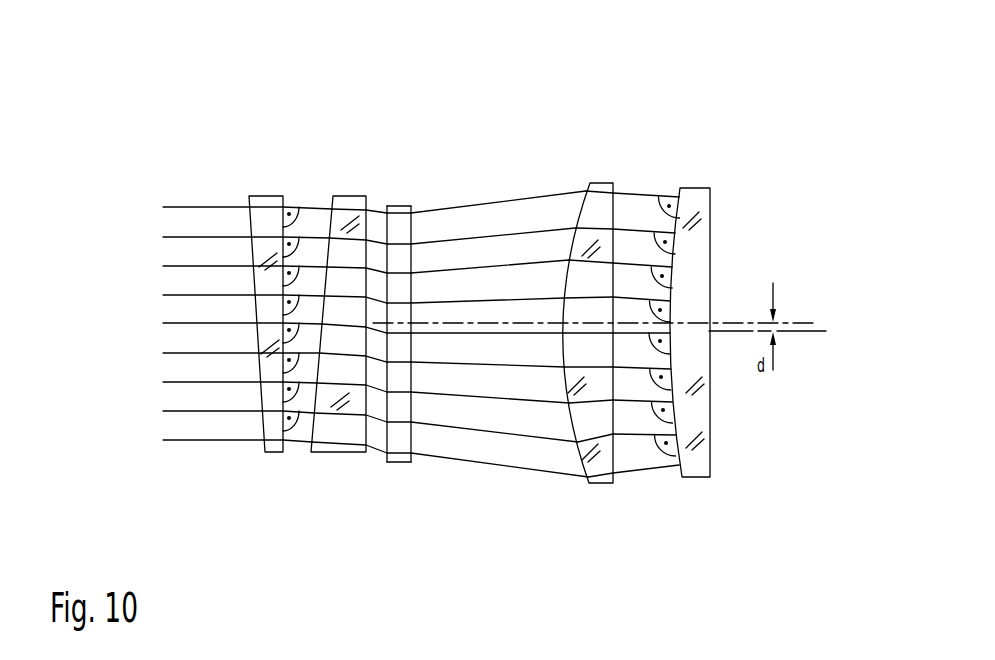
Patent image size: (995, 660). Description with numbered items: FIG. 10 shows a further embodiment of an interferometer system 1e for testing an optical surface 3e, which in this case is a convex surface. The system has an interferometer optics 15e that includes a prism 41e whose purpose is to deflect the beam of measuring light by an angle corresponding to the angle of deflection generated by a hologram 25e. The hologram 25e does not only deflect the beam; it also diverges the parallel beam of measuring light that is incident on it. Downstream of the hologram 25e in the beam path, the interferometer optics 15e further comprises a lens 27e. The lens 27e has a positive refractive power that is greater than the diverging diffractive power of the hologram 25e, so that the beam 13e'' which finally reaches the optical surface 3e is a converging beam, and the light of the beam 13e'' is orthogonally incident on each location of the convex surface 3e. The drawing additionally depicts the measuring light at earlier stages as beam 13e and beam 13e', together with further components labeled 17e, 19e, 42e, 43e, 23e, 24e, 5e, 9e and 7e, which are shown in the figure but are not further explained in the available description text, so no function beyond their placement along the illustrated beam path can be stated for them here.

The interferometer system 1e is at (276, 92).
The light beams 13e is at (247, 295).
The light beams after beam splitter 13e' is at (500, 310).
The beam 13e'' is at (646, 303).
The first optical element (wedge plate) 17e is at (265, 196).
The microlens elements 19e is at (287, 452).
The prism 41e is at (350, 196).
The wedge prism 42e is at (333, 203).
The plane parallel plate 43e is at (368, 205).
The plate body 23e is at (395, 463).
The first surface of plate 24e is at (383, 460).
The hologram 25e is at (410, 462).
The lens 27e is at (600, 483).
The interferometer optics 15e is at (522, 126).
The optical surface 3e is at (677, 197).
The second optical element 5e is at (703, 188).
The optical axis 9e is at (802, 320).
The focal line / object plane 7e is at (813, 332).